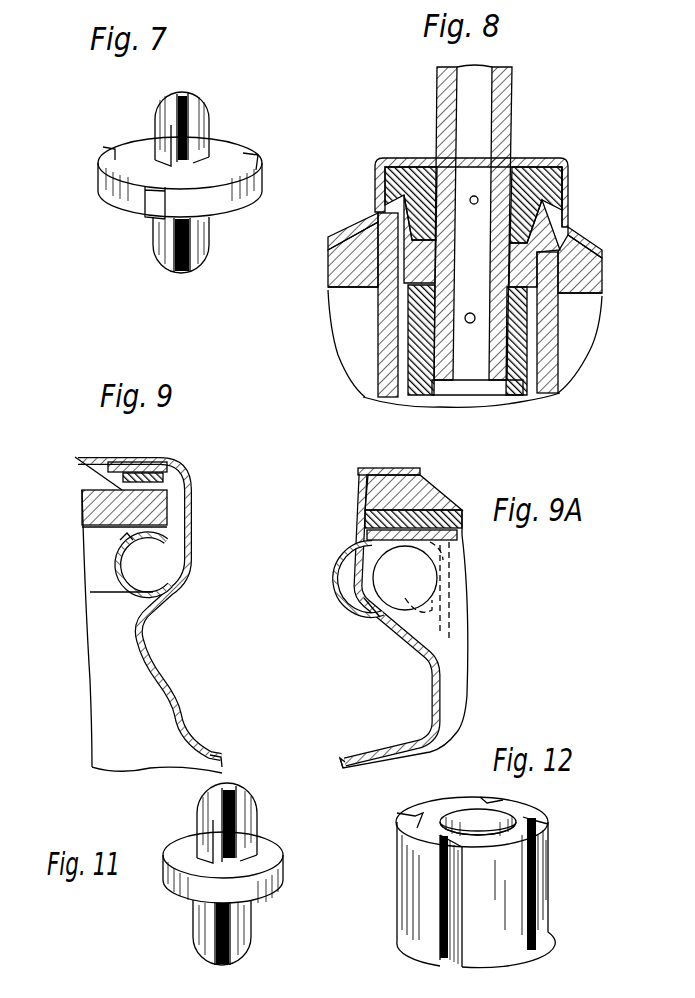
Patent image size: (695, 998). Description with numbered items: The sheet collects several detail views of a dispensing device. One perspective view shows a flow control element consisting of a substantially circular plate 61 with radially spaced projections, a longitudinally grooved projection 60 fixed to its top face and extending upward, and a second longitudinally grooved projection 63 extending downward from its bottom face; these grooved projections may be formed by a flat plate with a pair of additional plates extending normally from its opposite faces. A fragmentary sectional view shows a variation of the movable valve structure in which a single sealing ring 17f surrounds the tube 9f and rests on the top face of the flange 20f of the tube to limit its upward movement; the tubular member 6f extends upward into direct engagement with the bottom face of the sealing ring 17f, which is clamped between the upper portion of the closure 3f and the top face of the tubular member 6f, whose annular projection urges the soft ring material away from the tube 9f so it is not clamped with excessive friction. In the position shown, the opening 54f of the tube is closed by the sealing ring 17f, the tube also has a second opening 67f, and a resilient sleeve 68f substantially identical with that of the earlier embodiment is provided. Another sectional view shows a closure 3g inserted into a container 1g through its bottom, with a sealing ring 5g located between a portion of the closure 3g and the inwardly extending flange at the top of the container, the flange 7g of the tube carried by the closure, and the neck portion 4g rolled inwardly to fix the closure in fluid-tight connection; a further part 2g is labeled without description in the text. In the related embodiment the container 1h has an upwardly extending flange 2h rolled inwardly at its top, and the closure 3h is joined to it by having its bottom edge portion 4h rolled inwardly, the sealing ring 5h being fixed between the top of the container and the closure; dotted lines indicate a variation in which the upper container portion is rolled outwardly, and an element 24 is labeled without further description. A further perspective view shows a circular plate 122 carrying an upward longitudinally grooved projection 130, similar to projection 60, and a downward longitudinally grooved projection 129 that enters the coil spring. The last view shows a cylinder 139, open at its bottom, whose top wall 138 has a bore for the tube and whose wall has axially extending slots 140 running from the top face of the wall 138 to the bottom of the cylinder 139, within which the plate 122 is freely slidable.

In FIG. 7, the longitudinally grooved projection 60 is at (196, 113).
In FIG. 7, the plate 61 is at (220, 197).
In FIG. 7, the longitudinally grooved projection 63 is at (197, 247).
In FIG. 8, the tube 9f is at (437, 112).
In FIG. 8, the opening 54f is at (477, 196).
In FIG. 8, the sealing ring 17f is at (568, 166).
In FIG. 8, the closure 3f is at (568, 190).
In FIG. 8, the flange 20f is at (520, 262).
In FIG. 8, the resilient sleeve 68f is at (527, 320).
In FIG. 8, the tubular member 6f is at (547, 378).
In FIG. 8, the opening 67f is at (470, 323).
In FIG. 9, the sealing ring 5g is at (167, 464).
In FIG. 9, the flange 7g is at (160, 502).
In FIG. 9, the outer wall 2g is at (190, 513).
In FIG. 9, the closure 3g is at (160, 588).
In FIG. 9, the neck portion 4g is at (137, 643).
In FIG. 9, the container 1g is at (185, 727).
In FIG. 9A, the top block 24 is at (388, 493).
In FIG. 9A, the sealing ring 5h is at (380, 518).
In FIG. 9A, the closure 3h is at (362, 568).
In FIG. 9A, the upwardly extending flange 2h is at (358, 588).
In FIG. 9A, the bottom edge portion 4h is at (380, 618).
In FIG. 9A, the container 1h is at (423, 732).
In FIG. 11, the longitudinally grooved projection 130 is at (242, 810).
In FIG. 11, the circular plate 122 is at (258, 890).
In FIG. 11, the longitudinally grooved projection 129 is at (235, 940).
In FIG. 12, the top wall 138 is at (523, 810).
In FIG. 12, the cylinder 139 is at (533, 947).
In FIG. 12, the axially extending slots 140 is at (452, 935).